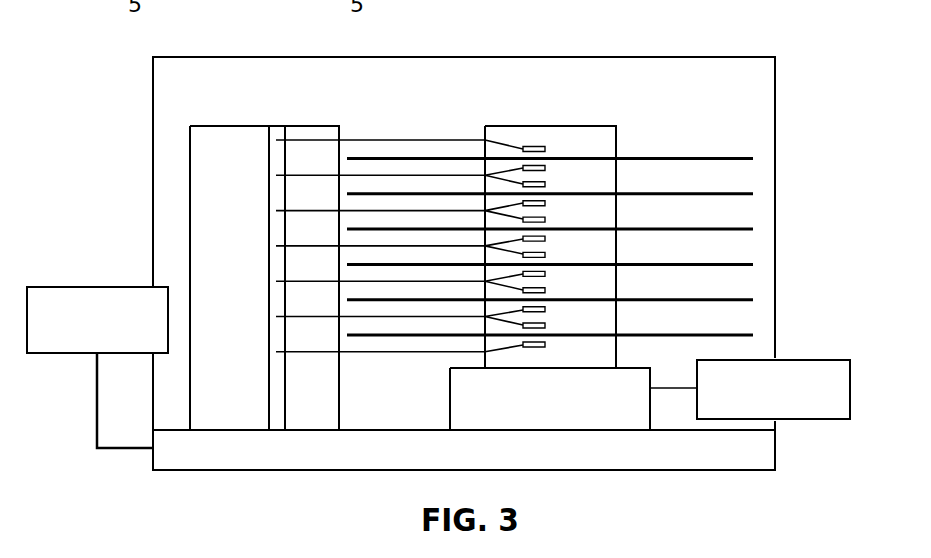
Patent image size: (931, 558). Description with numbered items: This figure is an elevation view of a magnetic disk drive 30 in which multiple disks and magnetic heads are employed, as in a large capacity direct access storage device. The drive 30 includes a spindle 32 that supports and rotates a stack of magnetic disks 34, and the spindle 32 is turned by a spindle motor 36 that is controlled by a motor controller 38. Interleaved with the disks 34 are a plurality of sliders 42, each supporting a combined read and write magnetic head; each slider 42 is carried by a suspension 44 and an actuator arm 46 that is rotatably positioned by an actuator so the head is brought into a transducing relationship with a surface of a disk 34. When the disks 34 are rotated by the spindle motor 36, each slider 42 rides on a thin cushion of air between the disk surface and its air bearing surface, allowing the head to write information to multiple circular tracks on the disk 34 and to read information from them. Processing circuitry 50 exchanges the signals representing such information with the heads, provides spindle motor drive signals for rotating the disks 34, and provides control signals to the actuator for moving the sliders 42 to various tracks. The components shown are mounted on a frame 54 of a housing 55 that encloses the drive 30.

The magnetic disk drive 30 is at (665, 131).
The spindle 32 is at (605, 126).
The magnetic disk 34 is at (745, 160).
The spindle motor 36 is at (539, 410).
The motor controller 38 is at (810, 421).
The slider 42 is at (546, 168).
The suspension 44 is at (522, 182).
The actuator arm 46 is at (450, 175).
The processing circuitry 50 is at (67, 287).
The frame 54 is at (203, 472).
The housing 55 is at (715, 57).